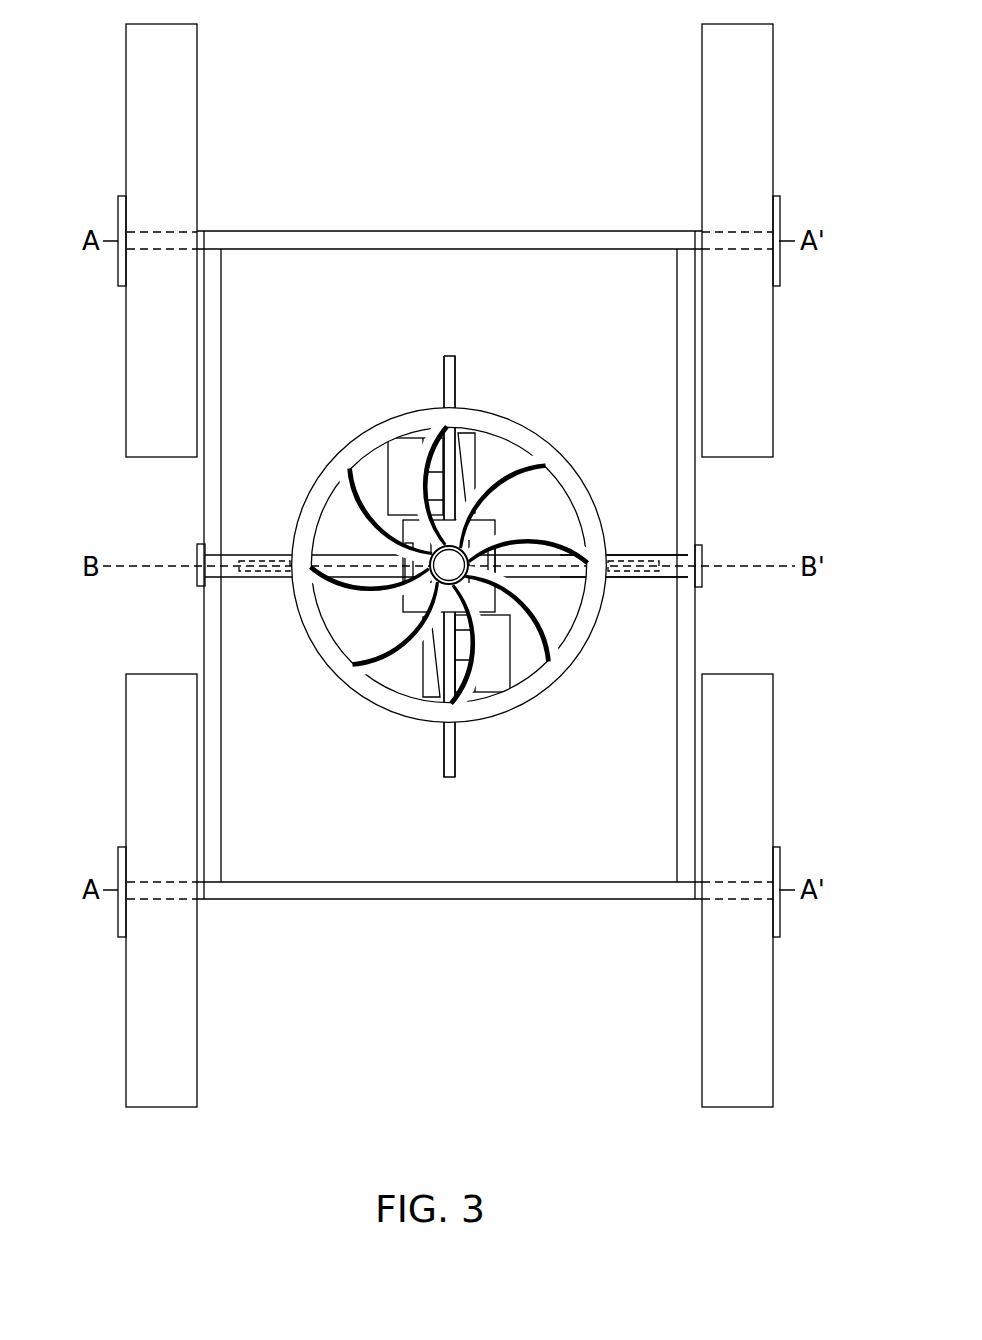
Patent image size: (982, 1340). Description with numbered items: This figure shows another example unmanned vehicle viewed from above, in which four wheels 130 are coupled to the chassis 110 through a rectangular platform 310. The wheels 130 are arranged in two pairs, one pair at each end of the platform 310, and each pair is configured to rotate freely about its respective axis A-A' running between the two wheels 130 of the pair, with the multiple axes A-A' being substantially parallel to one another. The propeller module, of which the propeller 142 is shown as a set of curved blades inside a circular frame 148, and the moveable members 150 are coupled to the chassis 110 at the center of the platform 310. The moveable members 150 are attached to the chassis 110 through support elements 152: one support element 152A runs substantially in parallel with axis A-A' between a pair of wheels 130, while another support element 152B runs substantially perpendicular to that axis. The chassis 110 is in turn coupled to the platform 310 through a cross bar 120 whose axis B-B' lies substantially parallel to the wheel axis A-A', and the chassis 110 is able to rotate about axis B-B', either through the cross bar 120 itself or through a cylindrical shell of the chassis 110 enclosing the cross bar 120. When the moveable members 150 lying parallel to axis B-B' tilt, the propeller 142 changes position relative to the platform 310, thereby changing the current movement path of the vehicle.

The chassis 110 is at (408, 533).
The cross bar 120 is at (668, 560).
The wheels 130 is at (137, 67).
The propeller 142 is at (432, 672).
The frame 148 is at (505, 462).
The moveable members 150 is at (466, 364).
The support element 152 is at (452, 755).
The support element 152A is at (254, 568).
The support element 152B is at (445, 392).
The platform 310 is at (430, 238).